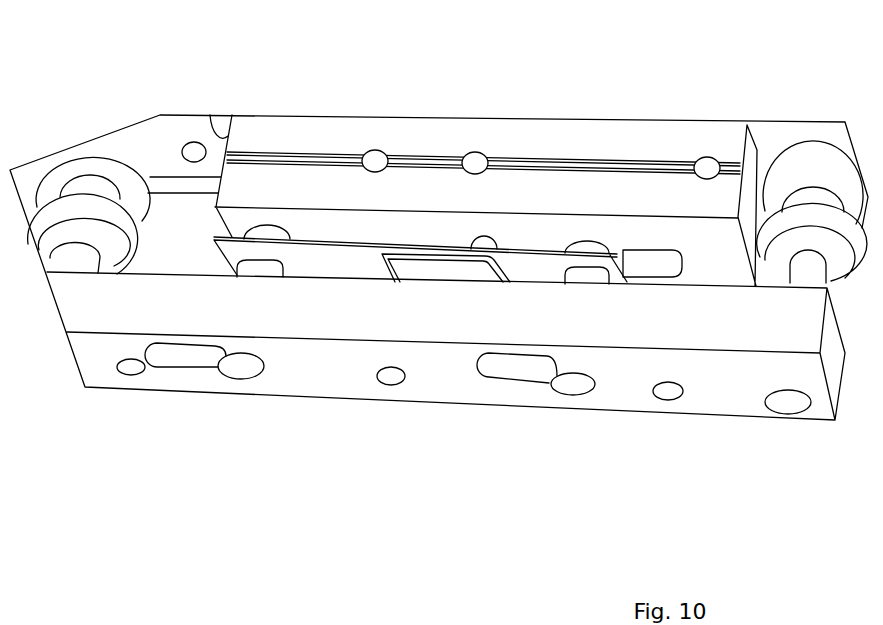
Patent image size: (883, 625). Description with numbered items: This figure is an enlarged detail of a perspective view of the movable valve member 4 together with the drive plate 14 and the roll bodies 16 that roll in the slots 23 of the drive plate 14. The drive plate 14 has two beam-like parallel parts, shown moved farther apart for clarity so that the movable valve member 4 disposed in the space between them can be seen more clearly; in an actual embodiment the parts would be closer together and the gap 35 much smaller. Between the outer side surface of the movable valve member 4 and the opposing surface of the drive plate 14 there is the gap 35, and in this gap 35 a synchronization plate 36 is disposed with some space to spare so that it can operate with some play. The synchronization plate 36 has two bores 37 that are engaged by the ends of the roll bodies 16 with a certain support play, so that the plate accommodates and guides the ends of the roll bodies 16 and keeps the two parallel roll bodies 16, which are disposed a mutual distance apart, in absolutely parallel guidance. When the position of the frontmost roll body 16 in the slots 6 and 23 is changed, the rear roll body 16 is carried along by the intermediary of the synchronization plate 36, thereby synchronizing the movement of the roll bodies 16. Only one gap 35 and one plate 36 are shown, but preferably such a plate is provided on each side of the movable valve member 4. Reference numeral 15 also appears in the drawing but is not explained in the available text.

The movable valve member 4 is at (520, 132).
The slot 6 is at (642, 263).
The drive plate 14 is at (443, 387).
The roller 15 is at (798, 163).
The roll body 16 is at (643, 473).
The slot 23 is at (557, 460).
The gap 35 is at (415, 228).
The synchronization plate 36 is at (360, 263).
The bore 37 is at (593, 273).